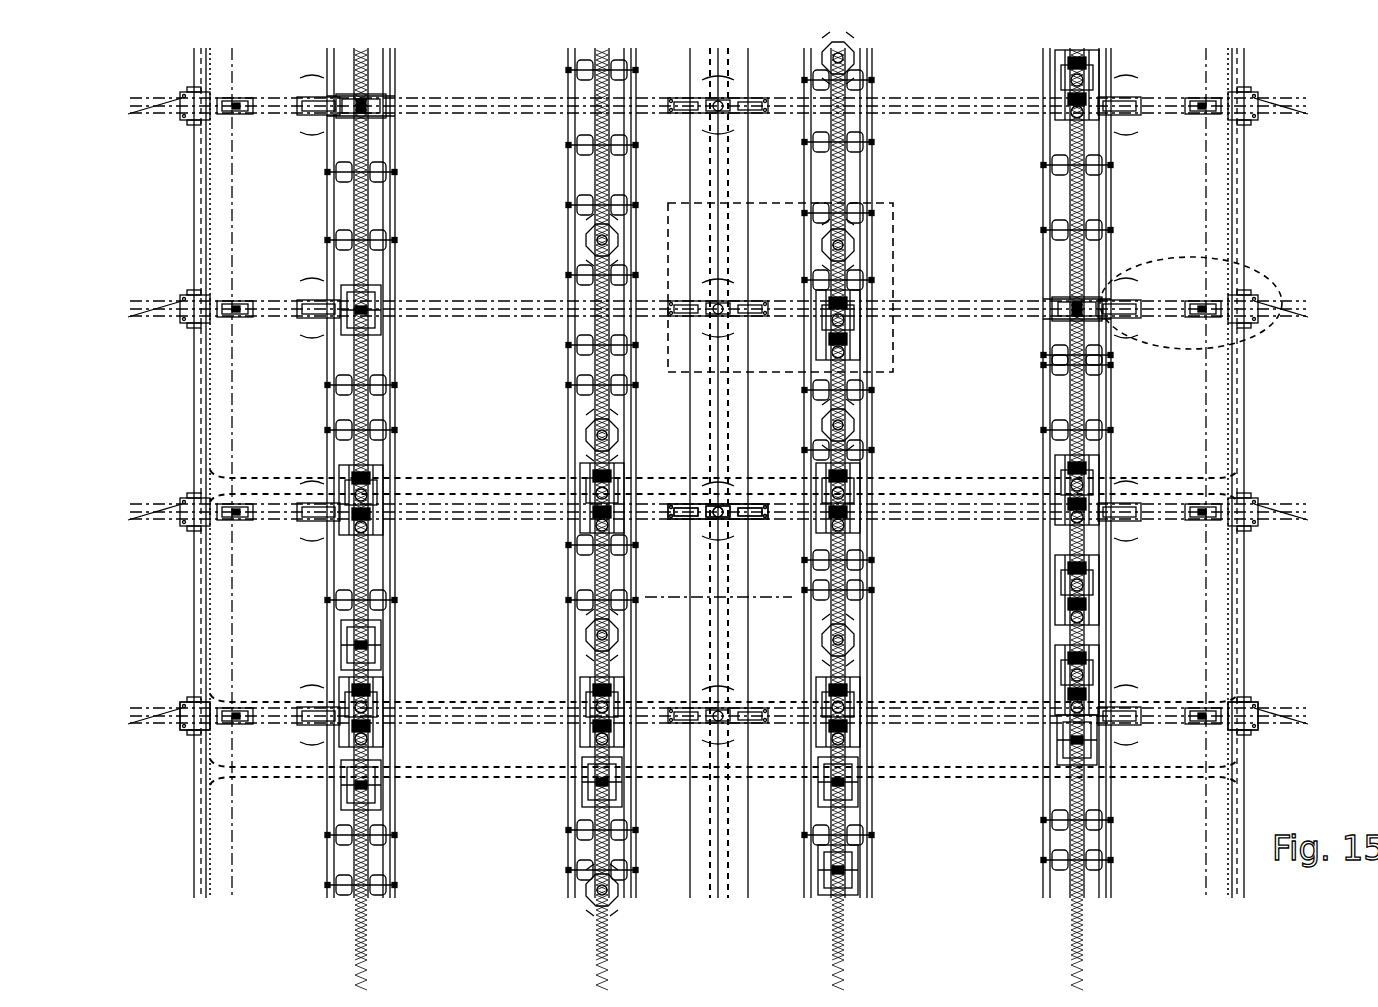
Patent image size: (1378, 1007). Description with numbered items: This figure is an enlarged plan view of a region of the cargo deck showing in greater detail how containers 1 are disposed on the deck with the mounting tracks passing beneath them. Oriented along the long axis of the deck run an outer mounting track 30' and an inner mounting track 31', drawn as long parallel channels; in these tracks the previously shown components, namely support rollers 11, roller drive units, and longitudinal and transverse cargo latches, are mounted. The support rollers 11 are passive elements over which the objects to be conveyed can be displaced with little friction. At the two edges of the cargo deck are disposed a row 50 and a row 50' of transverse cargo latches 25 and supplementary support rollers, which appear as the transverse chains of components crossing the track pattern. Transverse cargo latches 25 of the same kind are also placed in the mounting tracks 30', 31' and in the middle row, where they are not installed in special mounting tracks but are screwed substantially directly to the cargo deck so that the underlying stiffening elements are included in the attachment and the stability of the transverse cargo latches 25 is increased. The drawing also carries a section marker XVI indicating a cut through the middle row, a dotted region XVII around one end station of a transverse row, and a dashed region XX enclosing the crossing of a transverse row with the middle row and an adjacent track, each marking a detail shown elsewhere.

The container 1 is at (641, 478).
The support roller 11 is at (1060, 366).
The transverse cargo latch 25 is at (727, 527).
The outer mounting track 30' is at (719, 519).
The inner mounting track 31' is at (743, 511).
The row of transverse cargo latches and supplementary support rollers 50 is at (187, 758).
The row of transverse cargo latches and supplementary support rollers 50' is at (1280, 735).
The detail region XX is at (900, 341).
The section XVI- XVI is at (652, 570).
The detail region XVII is at (1169, 352).